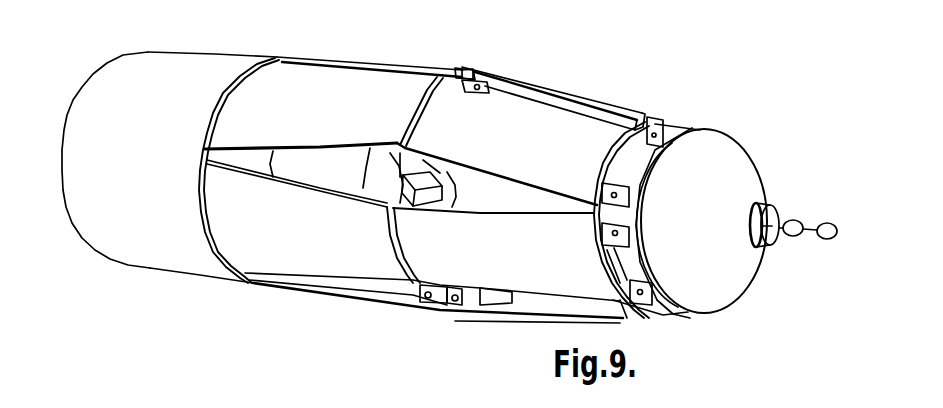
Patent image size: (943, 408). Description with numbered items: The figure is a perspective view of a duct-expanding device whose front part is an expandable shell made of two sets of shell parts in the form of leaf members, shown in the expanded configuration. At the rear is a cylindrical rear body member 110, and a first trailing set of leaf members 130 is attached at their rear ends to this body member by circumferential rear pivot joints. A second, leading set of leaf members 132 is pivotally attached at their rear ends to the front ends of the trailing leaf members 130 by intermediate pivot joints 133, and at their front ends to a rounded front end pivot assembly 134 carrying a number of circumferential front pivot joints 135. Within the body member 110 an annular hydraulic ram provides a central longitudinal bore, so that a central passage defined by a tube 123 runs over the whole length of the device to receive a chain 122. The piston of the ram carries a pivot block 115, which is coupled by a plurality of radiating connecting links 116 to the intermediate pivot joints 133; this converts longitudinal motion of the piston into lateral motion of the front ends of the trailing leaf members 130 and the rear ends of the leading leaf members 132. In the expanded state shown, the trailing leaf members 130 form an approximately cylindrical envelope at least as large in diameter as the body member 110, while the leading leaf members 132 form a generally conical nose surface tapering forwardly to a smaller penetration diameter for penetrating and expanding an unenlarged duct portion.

The cylindrical rear body member 110 is at (210, 64).
The pivot block 115 is at (463, 171).
The connecting links 116 is at (430, 162).
The chain 122 is at (790, 220).
The tube 123 is at (767, 246).
The trailing set of leaf members 130 is at (338, 100).
The leading set of leaf members 132 is at (553, 130).
The intermediate pivot joints 133 is at (485, 70).
The rounded front end pivot assembly 134 is at (713, 157).
The front pivot joints 135 is at (663, 123).